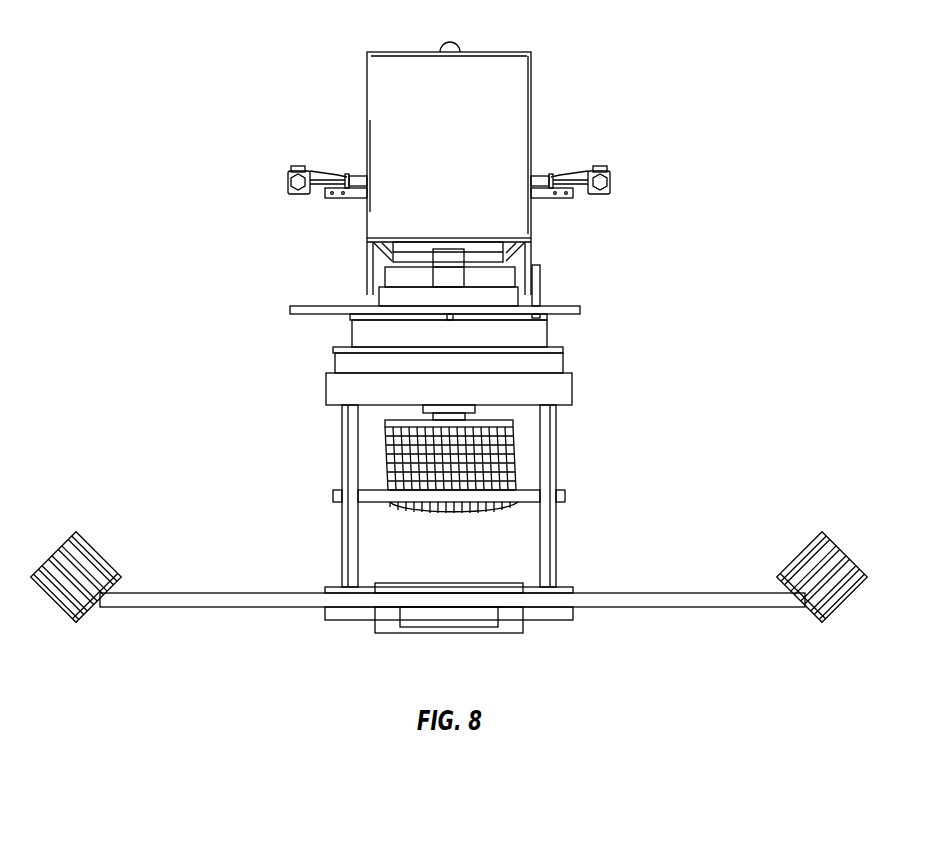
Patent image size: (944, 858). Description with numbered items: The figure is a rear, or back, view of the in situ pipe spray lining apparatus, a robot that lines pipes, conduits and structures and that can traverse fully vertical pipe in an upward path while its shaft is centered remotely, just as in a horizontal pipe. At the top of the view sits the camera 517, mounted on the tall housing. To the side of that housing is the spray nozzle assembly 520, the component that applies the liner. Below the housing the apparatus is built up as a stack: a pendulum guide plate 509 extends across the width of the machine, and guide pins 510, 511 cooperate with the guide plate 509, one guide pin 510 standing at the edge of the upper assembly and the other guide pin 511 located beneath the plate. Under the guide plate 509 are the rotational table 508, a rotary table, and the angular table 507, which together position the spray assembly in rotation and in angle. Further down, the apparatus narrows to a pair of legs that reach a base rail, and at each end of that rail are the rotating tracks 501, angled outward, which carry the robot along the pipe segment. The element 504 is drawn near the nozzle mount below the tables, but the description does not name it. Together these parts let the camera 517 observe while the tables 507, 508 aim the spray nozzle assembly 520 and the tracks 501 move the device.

The rotating tracks 501 is at (63, 545).
The nozzle mount 504 is at (425, 407).
The angular table 507 is at (552, 358).
The rotational table 508 is at (545, 340).
The guide plate 509 is at (291, 309).
The guide pin 510 is at (537, 281).
The guide pin 511 is at (447, 317).
The camera 517 is at (447, 44).
The spray nozzle assembly 520 is at (534, 199).